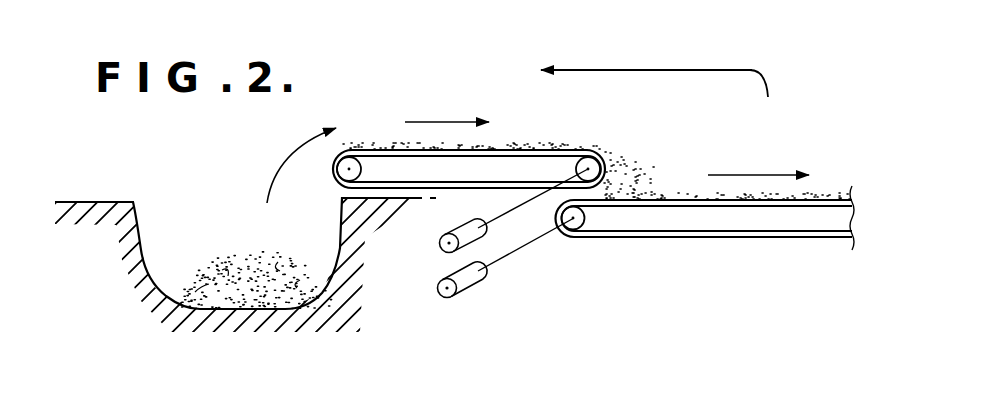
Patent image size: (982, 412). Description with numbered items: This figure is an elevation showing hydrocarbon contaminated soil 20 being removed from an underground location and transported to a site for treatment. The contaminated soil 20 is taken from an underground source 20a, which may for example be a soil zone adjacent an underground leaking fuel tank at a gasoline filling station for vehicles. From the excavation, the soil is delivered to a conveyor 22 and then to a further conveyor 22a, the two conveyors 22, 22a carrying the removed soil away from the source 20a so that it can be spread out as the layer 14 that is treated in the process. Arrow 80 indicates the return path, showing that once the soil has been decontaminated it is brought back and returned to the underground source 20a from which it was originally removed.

The layer 14 is at (829, 192).
The hydrocarbon contaminated soil 20 is at (204, 221).
The underground source 20a is at (250, 283).
The conveyor 22 is at (507, 144).
The conveyor 22a is at (717, 248).
The arrow 80 is at (675, 70).